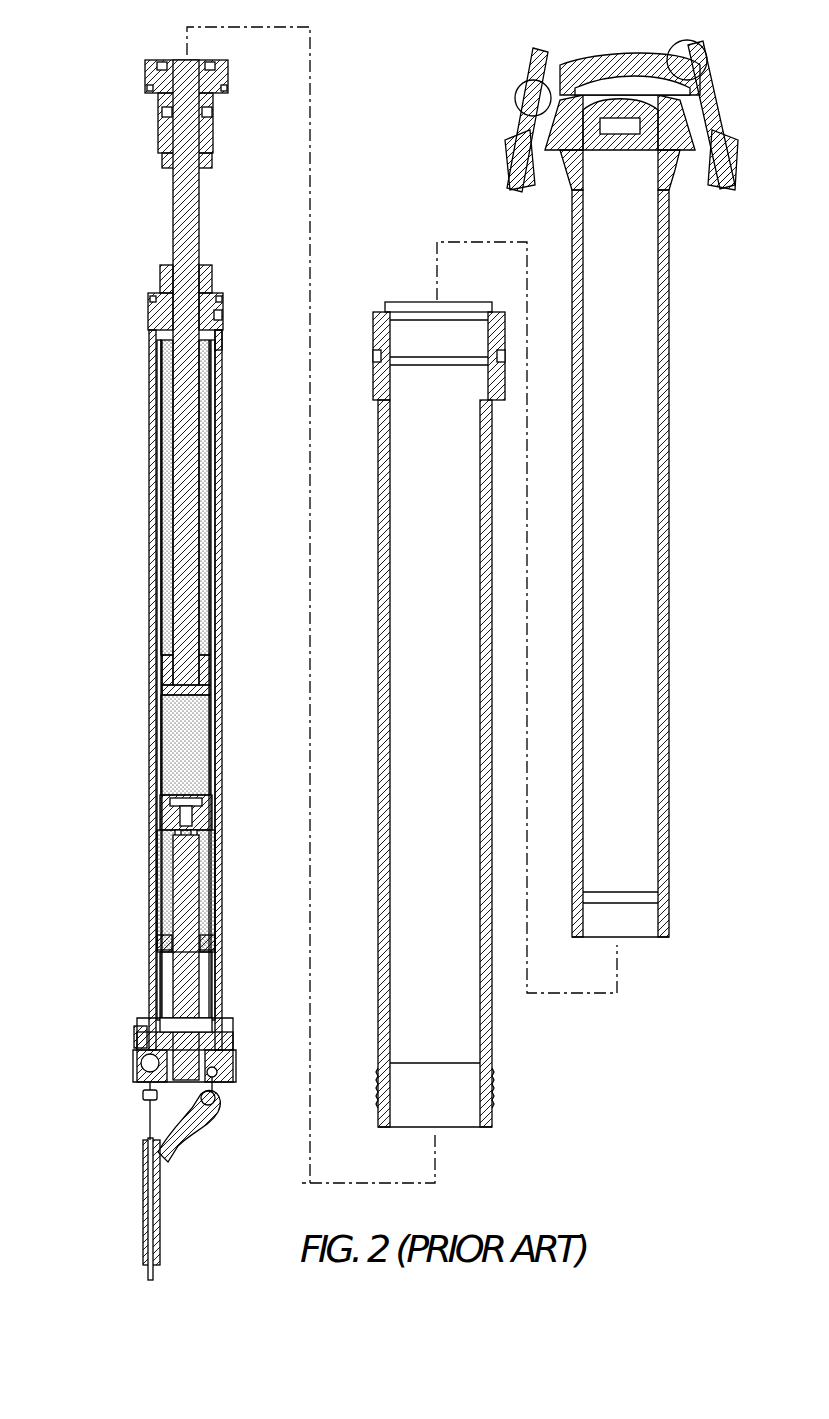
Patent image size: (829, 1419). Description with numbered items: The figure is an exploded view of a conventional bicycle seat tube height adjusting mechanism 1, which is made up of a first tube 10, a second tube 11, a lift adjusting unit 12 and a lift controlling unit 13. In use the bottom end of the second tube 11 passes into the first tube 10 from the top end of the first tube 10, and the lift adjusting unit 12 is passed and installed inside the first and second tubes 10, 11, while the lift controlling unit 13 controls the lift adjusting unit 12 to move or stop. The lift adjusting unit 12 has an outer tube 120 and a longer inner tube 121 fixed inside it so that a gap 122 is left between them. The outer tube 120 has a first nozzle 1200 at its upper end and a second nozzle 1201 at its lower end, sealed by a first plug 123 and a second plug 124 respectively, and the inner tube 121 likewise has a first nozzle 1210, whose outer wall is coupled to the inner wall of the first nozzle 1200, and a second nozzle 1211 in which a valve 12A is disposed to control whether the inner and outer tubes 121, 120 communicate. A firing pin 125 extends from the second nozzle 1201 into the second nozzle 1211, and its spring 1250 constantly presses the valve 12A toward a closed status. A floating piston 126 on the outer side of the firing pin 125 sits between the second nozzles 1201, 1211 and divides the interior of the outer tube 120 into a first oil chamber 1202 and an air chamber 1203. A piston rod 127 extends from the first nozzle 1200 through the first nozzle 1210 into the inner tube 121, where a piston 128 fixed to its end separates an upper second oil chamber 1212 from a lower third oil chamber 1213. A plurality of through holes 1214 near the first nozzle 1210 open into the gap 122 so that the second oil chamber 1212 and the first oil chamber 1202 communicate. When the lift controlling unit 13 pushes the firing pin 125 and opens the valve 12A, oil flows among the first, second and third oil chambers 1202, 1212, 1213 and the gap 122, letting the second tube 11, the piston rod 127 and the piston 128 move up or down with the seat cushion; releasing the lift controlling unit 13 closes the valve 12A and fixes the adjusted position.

The bicycle seat tube height adjusting mechanism 1 is at (385, 653).
The first tube 10 is at (378, 741).
The second tube 11 is at (665, 326).
The lift adjusting unit 12 is at (175, 571).
The outer tube 120 is at (219, 496).
The inner tube 121 is at (212, 433).
The gap 122 is at (216, 401).
The first plug 123 is at (150, 303).
The second plug 124 is at (234, 1055).
The firing pin 125 is at (188, 904).
The floating piston 126 is at (215, 940).
The piston rod 127 is at (185, 573).
The piston 128 is at (205, 685).
The first nozzle of the outer tube 1200 is at (150, 323).
The second nozzle of the outer tube 1201 is at (138, 1034).
The first oil chamber 1202 is at (205, 872).
The air chamber 1203 is at (205, 980).
The first nozzle of the inner tube 1210 is at (222, 319).
The second nozzle of the inner tube 1211 is at (160, 796).
The second oil chamber 1212 is at (207, 540).
The third oil chamber 1213 is at (190, 736).
The through holes 1214 is at (226, 343).
The valve 12A is at (198, 801).
The spring 1250 is at (205, 835).
The lift controlling unit 13 is at (125, 1186).